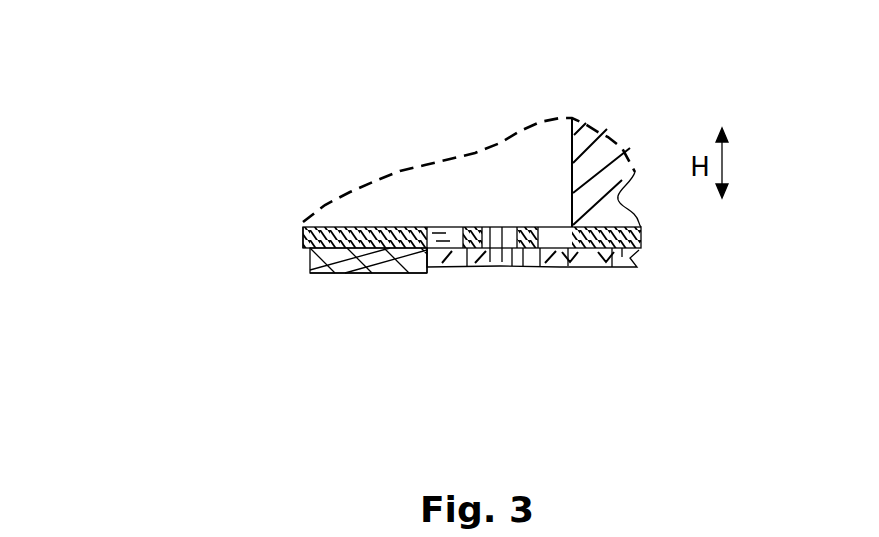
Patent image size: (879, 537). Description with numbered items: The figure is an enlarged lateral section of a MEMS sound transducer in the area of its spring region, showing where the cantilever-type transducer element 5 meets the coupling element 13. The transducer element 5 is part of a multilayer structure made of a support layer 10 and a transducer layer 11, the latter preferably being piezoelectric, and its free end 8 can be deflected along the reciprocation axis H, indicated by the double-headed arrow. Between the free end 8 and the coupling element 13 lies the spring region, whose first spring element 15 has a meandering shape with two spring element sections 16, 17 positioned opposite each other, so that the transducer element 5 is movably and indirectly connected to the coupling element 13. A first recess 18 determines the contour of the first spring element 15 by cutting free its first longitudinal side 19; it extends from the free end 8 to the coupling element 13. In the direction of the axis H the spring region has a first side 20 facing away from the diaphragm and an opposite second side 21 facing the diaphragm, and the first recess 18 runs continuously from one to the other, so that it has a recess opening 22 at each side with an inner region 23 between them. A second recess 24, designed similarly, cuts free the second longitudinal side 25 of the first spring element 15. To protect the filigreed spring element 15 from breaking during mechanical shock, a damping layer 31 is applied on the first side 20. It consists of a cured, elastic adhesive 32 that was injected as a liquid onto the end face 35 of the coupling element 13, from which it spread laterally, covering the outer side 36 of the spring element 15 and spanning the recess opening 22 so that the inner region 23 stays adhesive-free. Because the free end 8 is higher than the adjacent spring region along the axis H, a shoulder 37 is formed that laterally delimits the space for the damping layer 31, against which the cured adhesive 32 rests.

The transducer element 5 is at (301, 228).
The free end 8 is at (420, 227).
The support layer 10 is at (302, 241).
The transducer layer 11 is at (311, 260).
The coupling element 13 is at (633, 150).
The first spring element 15 is at (470, 227).
The spring element section 16 is at (467, 266).
The spring element section 17 is at (540, 266).
The first recess 18 is at (502, 227).
The first longitudinal side 19 is at (490, 227).
The first side 20 is at (523, 266).
The second side 21 is at (530, 228).
The recess opening 22 is at (443, 248).
The inner region 23 is at (337, 271).
The second recess 24 is at (445, 227).
The second longitudinal side 25 is at (449, 227).
The damping layer 31 is at (568, 266).
The adhesive 32 is at (622, 257).
The end face 35 is at (612, 267).
The outer side 36 is at (512, 266).
The shoulder 37 is at (410, 271).